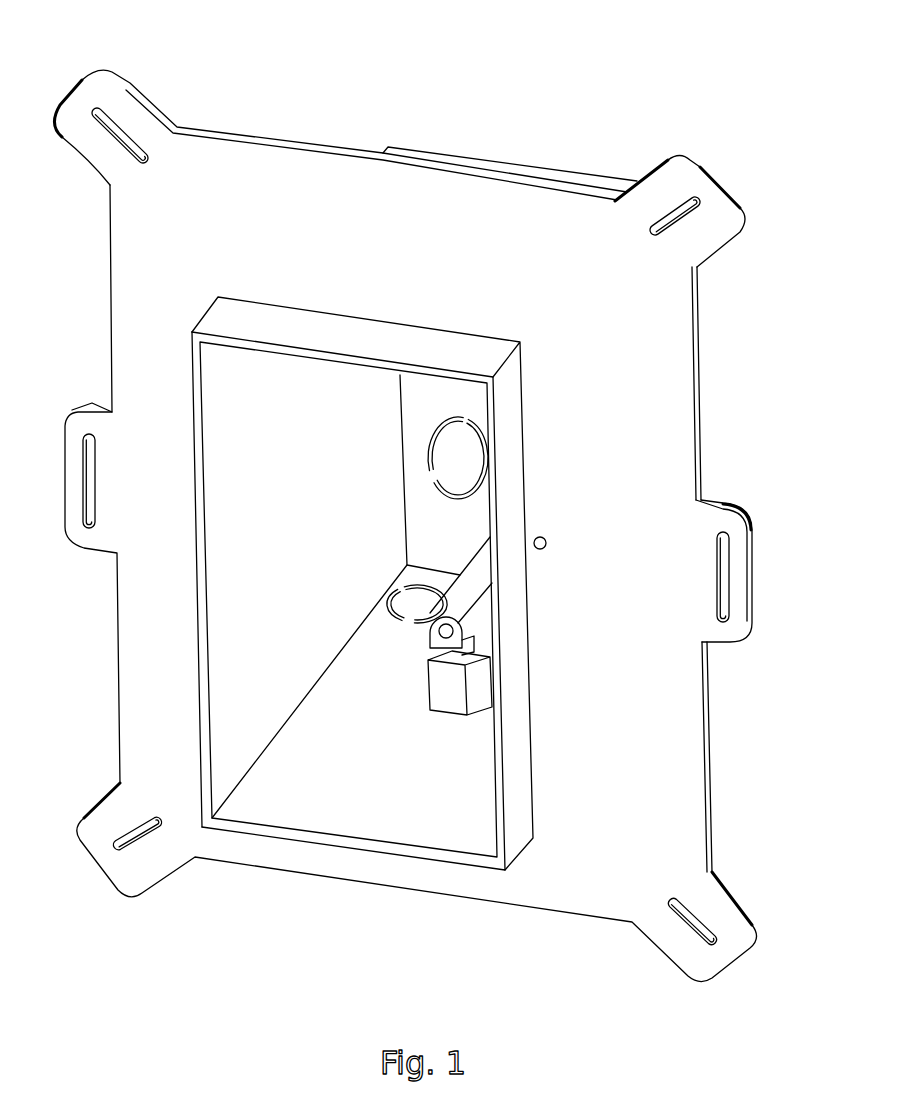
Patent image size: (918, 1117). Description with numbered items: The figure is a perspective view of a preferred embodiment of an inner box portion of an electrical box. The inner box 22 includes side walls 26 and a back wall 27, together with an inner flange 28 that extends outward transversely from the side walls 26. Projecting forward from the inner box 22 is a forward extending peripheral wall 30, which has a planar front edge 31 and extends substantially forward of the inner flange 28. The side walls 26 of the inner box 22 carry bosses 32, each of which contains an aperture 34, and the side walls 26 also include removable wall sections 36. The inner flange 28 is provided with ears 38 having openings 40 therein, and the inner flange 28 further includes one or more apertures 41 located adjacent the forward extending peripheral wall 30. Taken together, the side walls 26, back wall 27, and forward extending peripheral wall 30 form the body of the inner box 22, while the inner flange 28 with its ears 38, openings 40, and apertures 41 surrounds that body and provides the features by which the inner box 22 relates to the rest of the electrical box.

The inner box 22 is at (440, 117).
The side walls 26 is at (293, 510).
The back wall 27 is at (452, 538).
The inner flange 28 is at (137, 323).
The forward extending peripheral wall 30 is at (337, 332).
The planar front edge 31 is at (200, 628).
The bosses 32 is at (454, 701).
The apertures 34 is at (445, 630).
The removable wall sections 36 is at (471, 472).
The ears 38 is at (737, 200).
The openings 40 is at (682, 218).
The apertures 41 is at (548, 538).